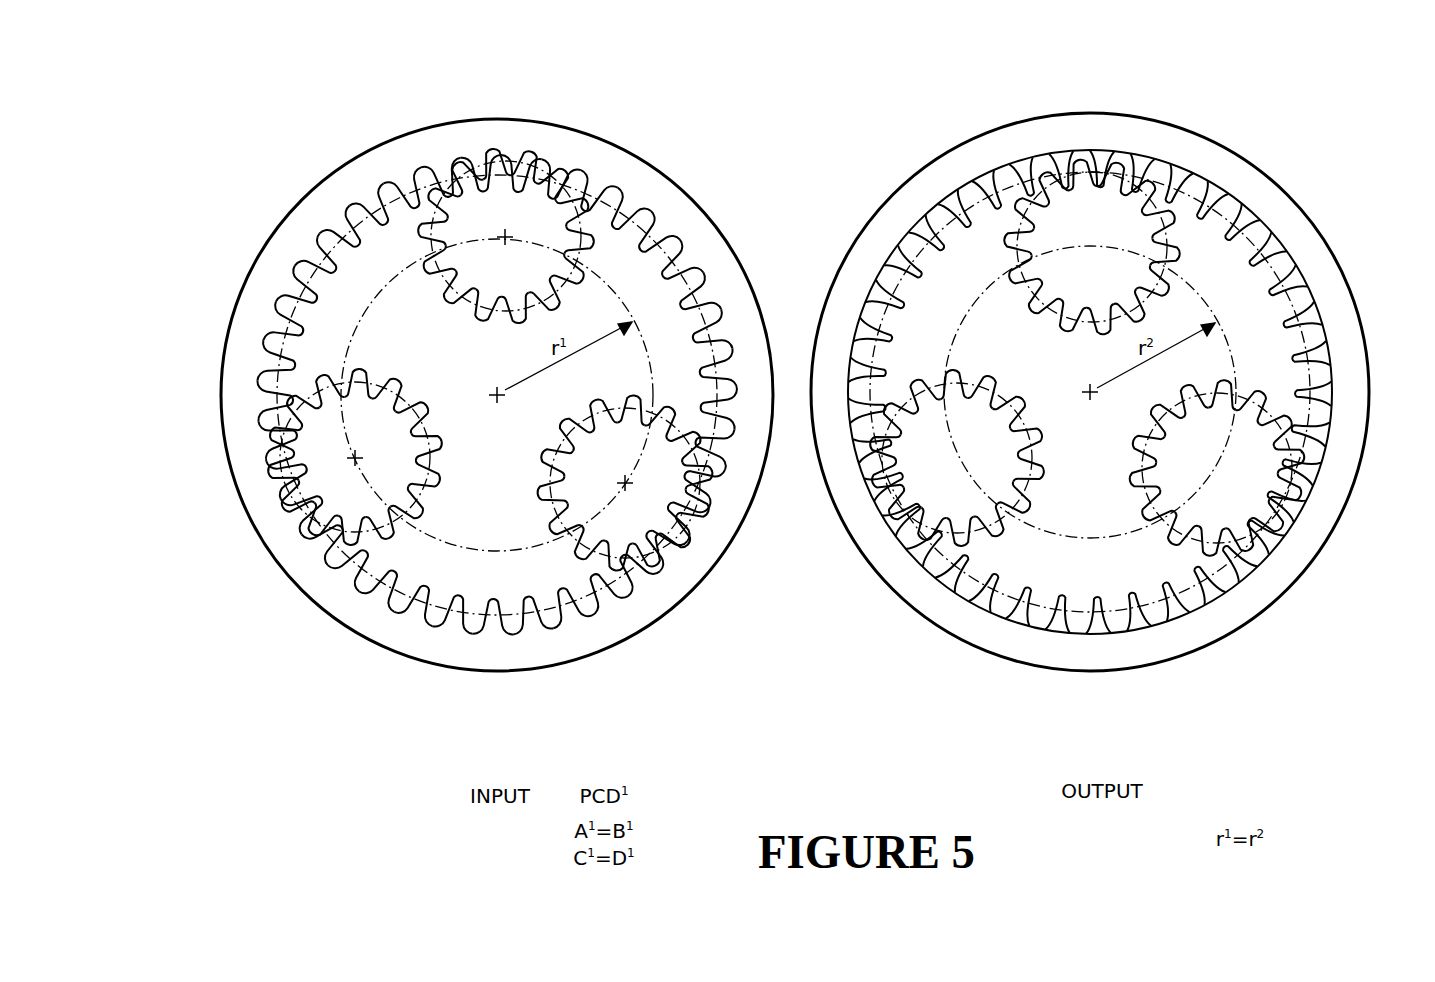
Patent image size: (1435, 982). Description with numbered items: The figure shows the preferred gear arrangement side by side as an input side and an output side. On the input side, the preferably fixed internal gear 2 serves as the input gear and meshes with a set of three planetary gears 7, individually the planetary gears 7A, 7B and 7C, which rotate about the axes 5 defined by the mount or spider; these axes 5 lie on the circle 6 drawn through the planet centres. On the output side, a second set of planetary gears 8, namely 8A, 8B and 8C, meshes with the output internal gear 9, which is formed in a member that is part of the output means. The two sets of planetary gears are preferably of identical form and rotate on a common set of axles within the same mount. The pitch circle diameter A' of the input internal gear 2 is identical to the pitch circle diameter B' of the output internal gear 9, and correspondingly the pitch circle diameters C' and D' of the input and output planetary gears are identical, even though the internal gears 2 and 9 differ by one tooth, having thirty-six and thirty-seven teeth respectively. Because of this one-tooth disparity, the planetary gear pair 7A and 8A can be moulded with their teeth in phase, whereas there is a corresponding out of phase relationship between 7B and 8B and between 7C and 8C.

The internal gear 2 is at (265, 413).
The axes 5 is at (503, 236).
The circle 6 is at (367, 305).
The planetary gears 7 is at (473, 270).
The planetary gear 7A is at (543, 208).
The planetary gear 7B is at (645, 512).
The planetary gear 7C is at (295, 503).
The planetary gears 8 is at (1075, 273).
The planetary gear 8A is at (1167, 187).
The planetary gear 8B is at (1257, 500).
The planetary gear 8C is at (912, 495).
The internal gear 9 is at (1320, 323).
The pitch circle diameter A' is at (335, 658).
The pitch circle diameter B' is at (1251, 641).
The pitch circle diameter C' is at (563, 654).
The pitch circle diameter D' is at (932, 617).